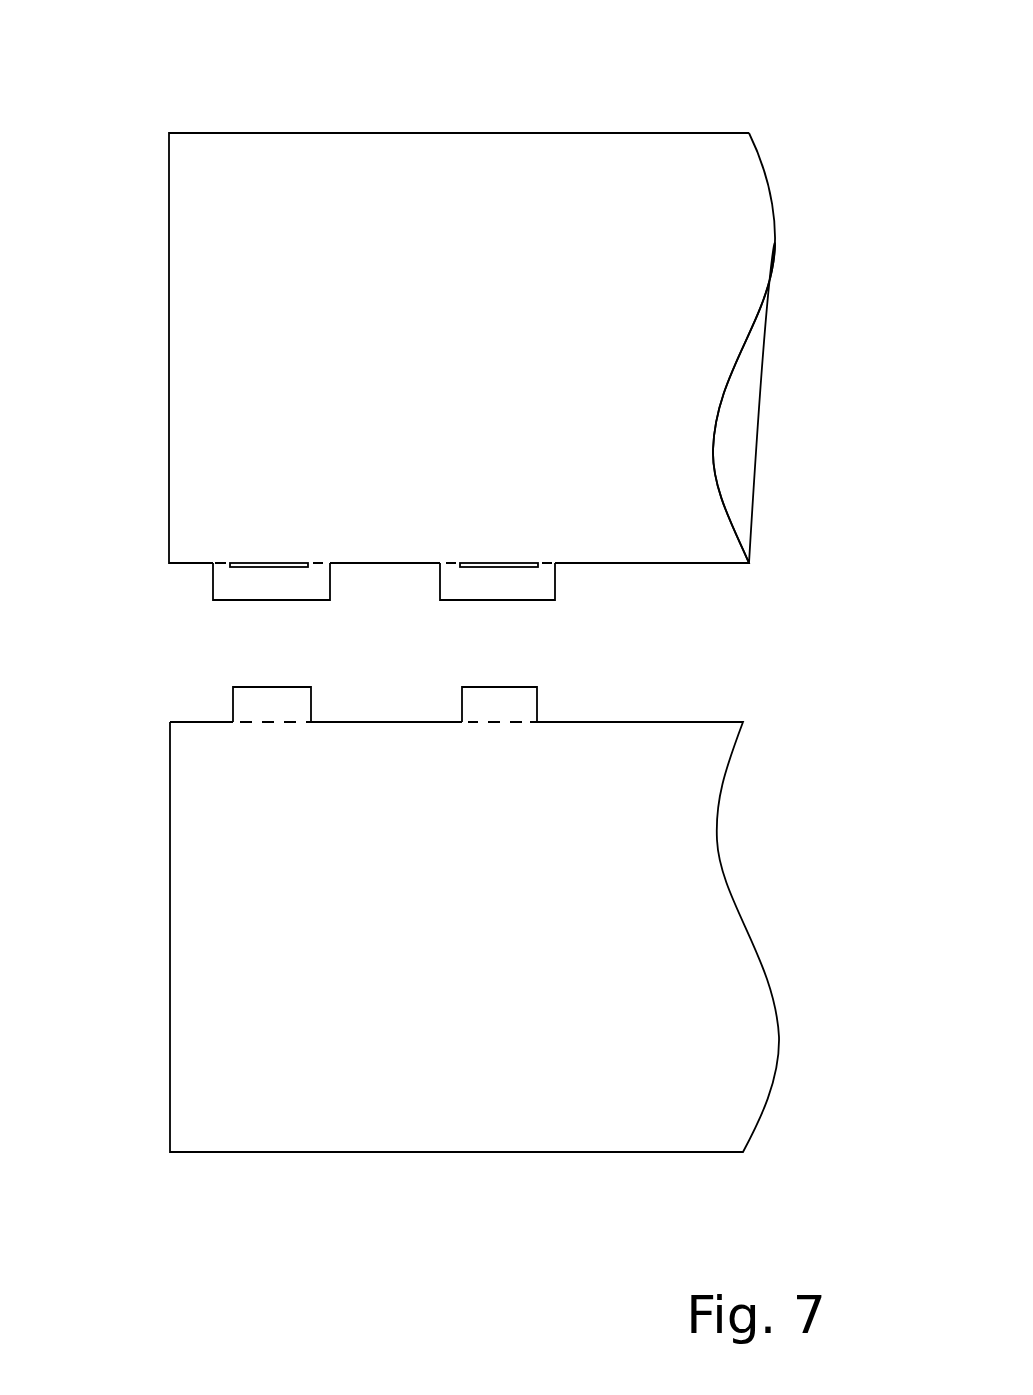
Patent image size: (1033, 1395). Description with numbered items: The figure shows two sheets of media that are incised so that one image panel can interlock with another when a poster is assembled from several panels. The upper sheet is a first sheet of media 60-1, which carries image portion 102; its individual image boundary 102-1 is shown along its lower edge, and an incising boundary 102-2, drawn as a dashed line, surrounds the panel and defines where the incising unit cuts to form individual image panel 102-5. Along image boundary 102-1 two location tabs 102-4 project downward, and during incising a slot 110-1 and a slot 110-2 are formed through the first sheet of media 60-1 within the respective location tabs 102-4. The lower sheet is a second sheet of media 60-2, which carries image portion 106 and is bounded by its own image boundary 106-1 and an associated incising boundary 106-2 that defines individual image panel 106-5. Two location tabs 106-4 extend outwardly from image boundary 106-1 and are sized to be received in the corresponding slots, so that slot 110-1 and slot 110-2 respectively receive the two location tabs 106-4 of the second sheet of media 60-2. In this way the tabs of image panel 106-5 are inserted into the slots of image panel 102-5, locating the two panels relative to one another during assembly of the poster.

The first sheet of media 60-1 is at (258, 76).
The second sheet of media 60-2 is at (132, 1137).
The image portion 102 is at (580, 203).
The image boundary 102-1 is at (317, 565).
The incising boundary 102-2 is at (367, 133).
The location tabs 102-4 is at (340, 582).
The image panel 102-5 is at (460, 110).
The image portion 106 is at (552, 1064).
The image boundary 106-1 is at (518, 722).
The incising boundary 106-2 is at (270, 686).
The location tabs 106-4 is at (450, 704).
The image panel 106-5 is at (413, 1190).
The slot 110-1 is at (263, 562).
The slot 110-2 is at (500, 562).